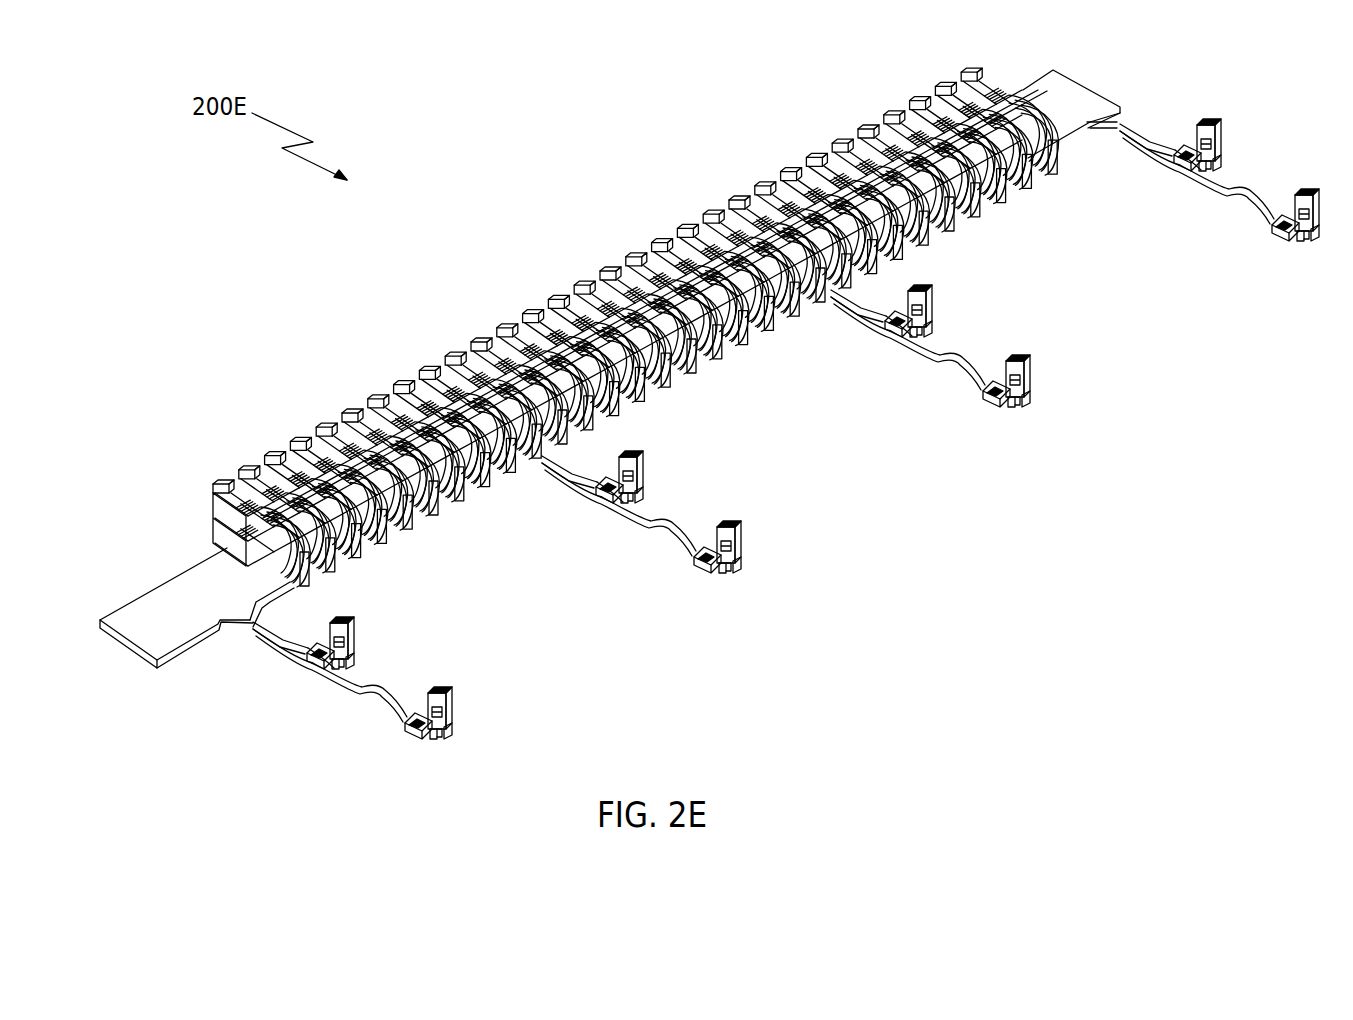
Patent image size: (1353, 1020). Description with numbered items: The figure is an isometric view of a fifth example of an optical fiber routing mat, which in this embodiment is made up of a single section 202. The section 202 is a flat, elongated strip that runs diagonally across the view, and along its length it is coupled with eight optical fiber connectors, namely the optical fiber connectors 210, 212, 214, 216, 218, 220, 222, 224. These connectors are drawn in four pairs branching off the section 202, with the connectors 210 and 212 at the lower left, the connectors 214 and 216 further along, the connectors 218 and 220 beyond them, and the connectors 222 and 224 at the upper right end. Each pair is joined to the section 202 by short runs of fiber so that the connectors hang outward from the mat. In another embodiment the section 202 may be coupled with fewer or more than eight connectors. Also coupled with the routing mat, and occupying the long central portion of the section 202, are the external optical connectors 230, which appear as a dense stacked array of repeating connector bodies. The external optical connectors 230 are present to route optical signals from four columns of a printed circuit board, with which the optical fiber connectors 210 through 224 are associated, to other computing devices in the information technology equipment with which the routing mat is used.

The section 202 is at (158, 603).
The optical fiber connector 210 is at (357, 633).
The optical fiber connector 212 is at (455, 700).
The optical fiber connector 214 is at (646, 466).
The optical fiber connector 216 is at (744, 534).
The optical fiber connector 218 is at (935, 300).
The optical fiber connector 220 is at (1033, 368).
The optical fiber connector 222 is at (1224, 134).
The optical fiber connector 224 is at (1294, 212).
The external optical connectors 230 is at (478, 338).